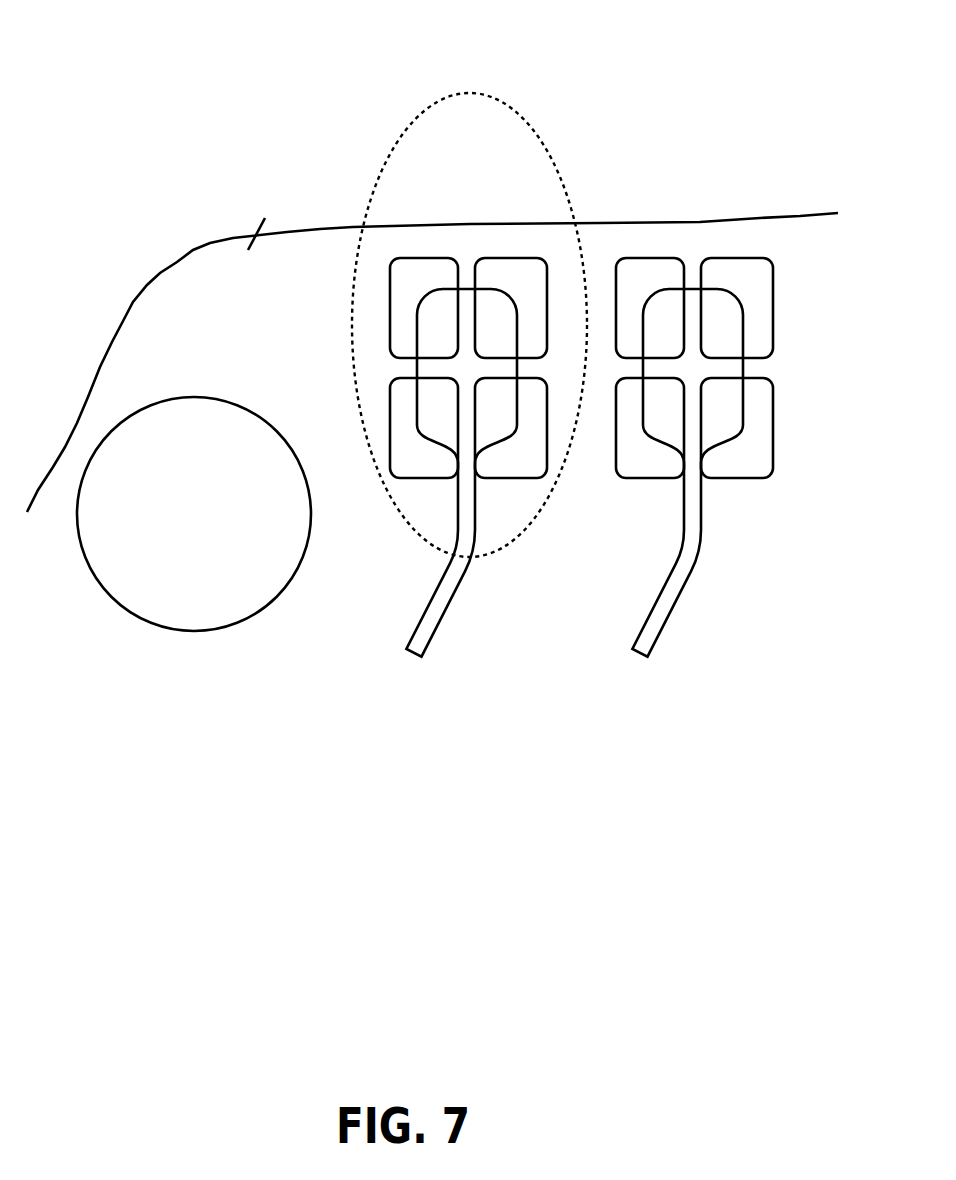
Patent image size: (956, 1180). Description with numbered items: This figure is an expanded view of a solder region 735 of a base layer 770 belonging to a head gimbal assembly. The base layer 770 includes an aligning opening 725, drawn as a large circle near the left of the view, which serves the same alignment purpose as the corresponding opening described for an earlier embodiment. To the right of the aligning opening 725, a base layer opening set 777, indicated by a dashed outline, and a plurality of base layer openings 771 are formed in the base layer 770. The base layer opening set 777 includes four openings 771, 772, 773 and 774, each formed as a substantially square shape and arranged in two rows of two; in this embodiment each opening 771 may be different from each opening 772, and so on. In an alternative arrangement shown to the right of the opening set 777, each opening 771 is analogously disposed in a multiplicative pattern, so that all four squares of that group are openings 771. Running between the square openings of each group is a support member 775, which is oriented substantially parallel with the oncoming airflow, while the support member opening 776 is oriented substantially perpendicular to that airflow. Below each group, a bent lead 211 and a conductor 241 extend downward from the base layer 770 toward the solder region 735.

The solder region 735 is at (80, 37).
The base layer 770 is at (147, 325).
The aligning opening 725 is at (148, 580).
The base layer opening set 777 is at (418, 117).
The base layer opening 771 is at (417, 292).
The opening 772 is at (528, 293).
The opening 773 is at (403, 462).
The opening 774 is at (537, 462).
The support member 775 is at (467, 282).
The support member opening 776 is at (403, 367).
The cable 211 is at (437, 617).
The conductor 241 is at (495, 428).